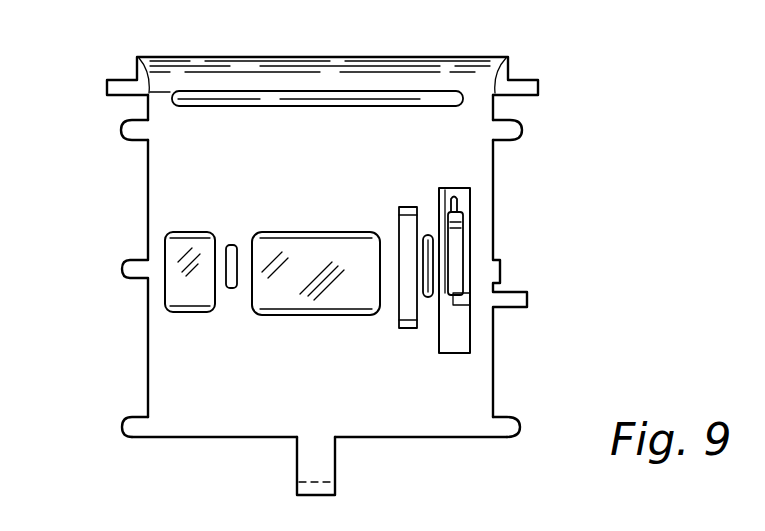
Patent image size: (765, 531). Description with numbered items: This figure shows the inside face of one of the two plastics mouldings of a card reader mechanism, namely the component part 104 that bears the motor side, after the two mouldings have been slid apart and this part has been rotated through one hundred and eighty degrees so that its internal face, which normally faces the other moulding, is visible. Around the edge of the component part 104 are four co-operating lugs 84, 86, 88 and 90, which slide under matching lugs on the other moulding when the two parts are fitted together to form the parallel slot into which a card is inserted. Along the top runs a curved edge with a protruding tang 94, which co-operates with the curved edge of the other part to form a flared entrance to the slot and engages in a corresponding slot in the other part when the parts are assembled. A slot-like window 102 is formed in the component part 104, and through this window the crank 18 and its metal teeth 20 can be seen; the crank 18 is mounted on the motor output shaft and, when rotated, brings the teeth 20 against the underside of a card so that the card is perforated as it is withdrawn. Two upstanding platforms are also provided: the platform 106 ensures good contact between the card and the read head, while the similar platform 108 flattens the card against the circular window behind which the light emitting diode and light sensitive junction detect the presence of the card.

The crank 18 is at (458, 242).
The metal teeth 20 is at (458, 203).
The co-operating lug 84 is at (130, 440).
The co-operating lug 86 is at (505, 439).
The co-operating lug 88 is at (128, 141).
The co-operating lug 90 is at (515, 141).
The protruding tang 94 is at (430, 63).
The slot-like window 102 is at (470, 330).
The component part 104 is at (148, 345).
The upstanding platform 106 is at (316, 300).
The upstanding platform 108 is at (187, 314).